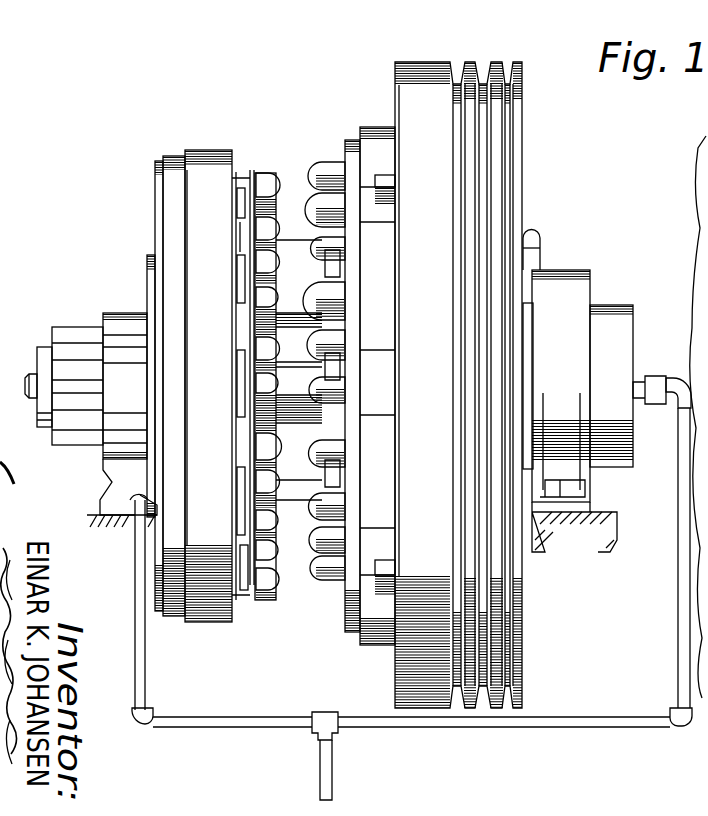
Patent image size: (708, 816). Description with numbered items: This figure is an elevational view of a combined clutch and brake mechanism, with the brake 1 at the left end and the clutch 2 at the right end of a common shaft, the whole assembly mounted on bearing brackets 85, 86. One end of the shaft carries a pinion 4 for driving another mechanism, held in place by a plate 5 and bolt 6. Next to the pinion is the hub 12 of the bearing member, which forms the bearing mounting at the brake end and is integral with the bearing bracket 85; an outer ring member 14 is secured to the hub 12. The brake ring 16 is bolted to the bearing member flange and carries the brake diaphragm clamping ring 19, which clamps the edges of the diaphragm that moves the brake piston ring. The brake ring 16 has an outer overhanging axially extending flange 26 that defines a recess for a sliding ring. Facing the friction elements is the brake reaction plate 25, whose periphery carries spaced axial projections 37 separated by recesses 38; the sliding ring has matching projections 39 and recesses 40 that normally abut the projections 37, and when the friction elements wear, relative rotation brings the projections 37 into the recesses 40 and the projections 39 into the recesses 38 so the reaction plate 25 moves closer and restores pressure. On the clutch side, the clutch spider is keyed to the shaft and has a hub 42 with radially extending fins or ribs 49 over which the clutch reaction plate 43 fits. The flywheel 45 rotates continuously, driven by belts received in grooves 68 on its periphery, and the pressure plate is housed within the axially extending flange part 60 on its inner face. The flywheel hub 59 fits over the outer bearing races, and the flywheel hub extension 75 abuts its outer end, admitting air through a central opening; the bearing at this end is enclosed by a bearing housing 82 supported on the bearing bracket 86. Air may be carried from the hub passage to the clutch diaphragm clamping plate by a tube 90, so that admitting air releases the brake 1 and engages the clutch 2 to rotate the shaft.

The brake 1 is at (202, 140).
The clutch 2 is at (352, 92).
The pinion 4 is at (75, 326).
The plate 5 is at (42, 346).
The bolt 6 is at (30, 373).
The hub 12 is at (128, 312).
The outer ring member 14 is at (108, 312).
The brake ring 16 is at (184, 157).
The brake diaphragm clamping ring 19 is at (156, 175).
The brake reaction plate 25 is at (252, 200).
The outer overhanging axially extending flange 26 is at (215, 150).
The projections 37 is at (242, 240).
The recess 38 is at (241, 275).
The projections 39 is at (238, 232).
The recesses 40 is at (237, 203).
The hub 42 is at (245, 343).
The clutch reaction plate 43 is at (338, 148).
The flywheel 45 is at (433, 70).
The fins or ribs 49 is at (295, 462).
The flywheel hub 59 is at (529, 366).
The axially extending flange part 60 is at (370, 127).
The grooves 68 is at (508, 62).
The flywheel hub extension 75 is at (615, 305).
The bearing housing 82 is at (590, 269).
The bearing bracket 85 is at (112, 477).
The bearing bracket 86 is at (590, 485).
The tube 90 is at (536, 262).